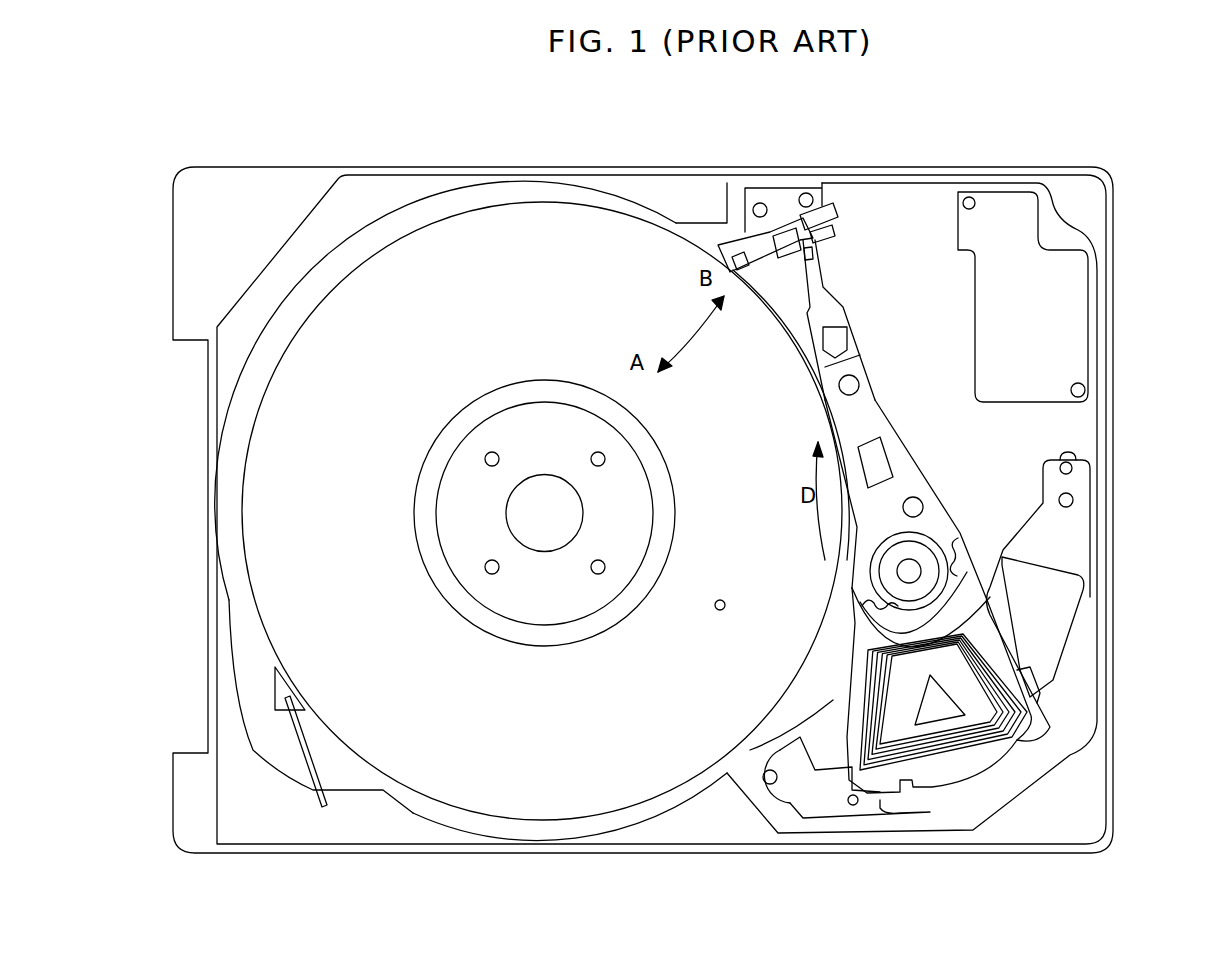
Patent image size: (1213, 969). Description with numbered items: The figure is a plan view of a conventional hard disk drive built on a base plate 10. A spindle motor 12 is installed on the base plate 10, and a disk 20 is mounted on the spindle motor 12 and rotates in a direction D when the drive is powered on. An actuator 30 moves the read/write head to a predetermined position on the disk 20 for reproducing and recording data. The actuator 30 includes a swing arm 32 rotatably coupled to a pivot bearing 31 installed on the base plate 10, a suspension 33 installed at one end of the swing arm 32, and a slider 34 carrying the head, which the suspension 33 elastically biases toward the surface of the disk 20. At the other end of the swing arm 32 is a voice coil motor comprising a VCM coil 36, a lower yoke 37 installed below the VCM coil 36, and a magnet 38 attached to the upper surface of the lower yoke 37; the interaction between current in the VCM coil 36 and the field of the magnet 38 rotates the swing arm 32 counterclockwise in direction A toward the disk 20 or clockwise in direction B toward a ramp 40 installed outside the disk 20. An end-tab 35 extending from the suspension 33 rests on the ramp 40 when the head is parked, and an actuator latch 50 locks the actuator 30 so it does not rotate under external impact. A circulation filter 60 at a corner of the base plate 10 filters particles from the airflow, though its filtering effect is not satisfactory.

The base plate 10 is at (680, 188).
The spindle motor 12 is at (463, 480).
The disk 20 is at (508, 222).
The actuator 30 is at (968, 493).
The pivot bearing 31 is at (913, 568).
The swing arm 32 is at (895, 450).
The suspension 33 is at (825, 287).
The slider 34 is at (815, 260).
The end-tab 35 is at (802, 237).
The VCM coil 36 is at (1025, 722).
The lower yoke 37 is at (1073, 690).
The magnet 38 is at (1068, 600).
The ramp 40 is at (755, 238).
The actuator latch 50 is at (863, 807).
The circulation filter 60 is at (300, 740).